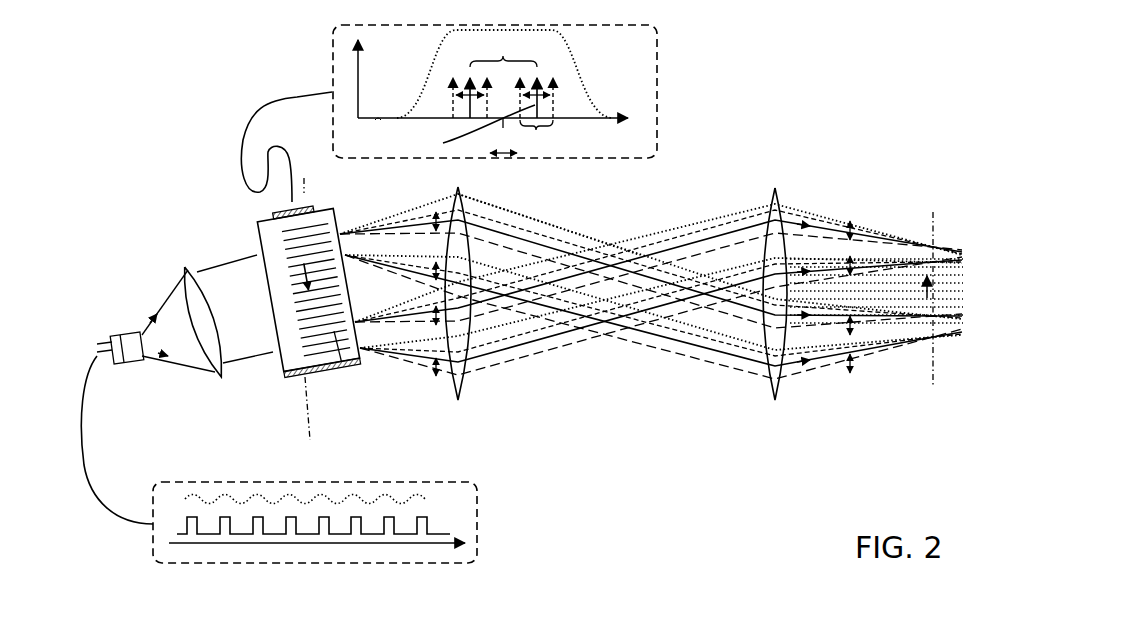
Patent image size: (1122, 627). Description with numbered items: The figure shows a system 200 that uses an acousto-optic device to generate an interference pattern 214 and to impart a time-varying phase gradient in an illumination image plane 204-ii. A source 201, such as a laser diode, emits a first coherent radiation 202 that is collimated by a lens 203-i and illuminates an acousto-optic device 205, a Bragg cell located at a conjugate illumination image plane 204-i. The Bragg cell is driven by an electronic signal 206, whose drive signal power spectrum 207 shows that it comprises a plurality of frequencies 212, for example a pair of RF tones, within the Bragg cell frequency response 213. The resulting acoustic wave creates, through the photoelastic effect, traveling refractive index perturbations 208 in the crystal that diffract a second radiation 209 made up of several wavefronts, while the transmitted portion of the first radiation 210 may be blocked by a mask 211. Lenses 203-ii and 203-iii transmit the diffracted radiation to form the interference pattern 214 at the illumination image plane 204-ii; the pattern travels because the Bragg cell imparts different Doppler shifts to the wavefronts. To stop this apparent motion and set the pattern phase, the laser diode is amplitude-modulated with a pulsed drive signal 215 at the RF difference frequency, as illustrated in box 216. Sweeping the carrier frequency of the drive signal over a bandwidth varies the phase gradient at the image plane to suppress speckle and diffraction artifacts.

The system 200 is at (722, 80).
The source 201 is at (118, 332).
The first coherent radiation 202 is at (168, 300).
The lens 203-i is at (223, 378).
The lens 203-ii is at (458, 400).
The lens 203-iii is at (775, 400).
The conjugate illumination image plane 204-i is at (308, 321).
The illumination image plane 204-ii is at (933, 397).
The acousto-optic device 205 is at (257, 223).
The electronic signal 206 is at (277, 99).
The drive signal power spectrum 207 is at (470, 86).
The traveling refractive index perturbation 208 is at (337, 373).
The second radiation 209 is at (402, 368).
The transmitted portion of the first radiation 210 is at (563, 221).
The mask 211 is at (617, 240).
The plurality of frequencies 212 is at (466, 100).
The Bragg cell frequency response 213 is at (577, 87).
The interference pattern 214 is at (927, 303).
The amplitude-modulated signal 215 is at (95, 472).
The box 216 is at (473, 487).